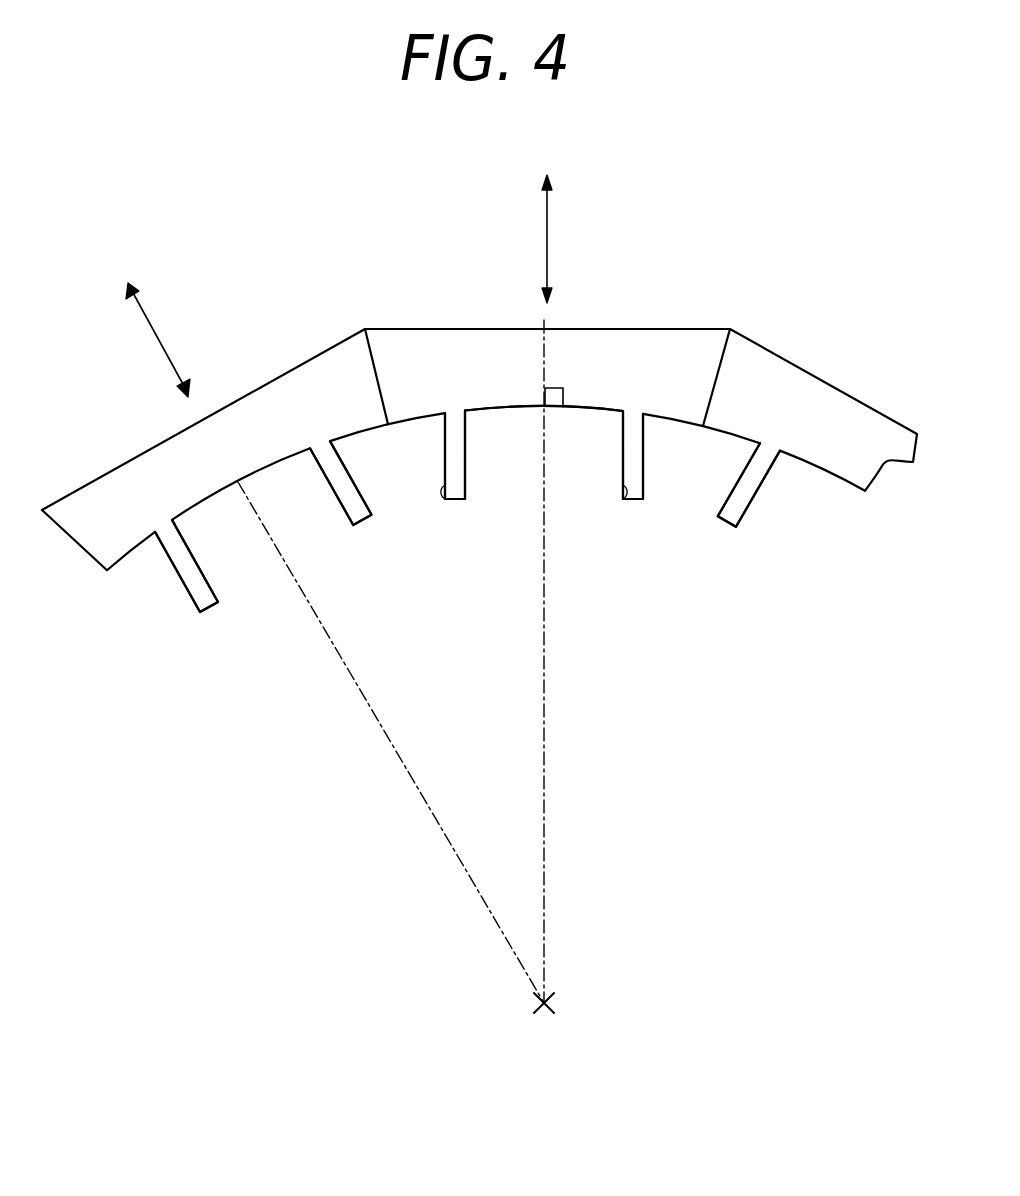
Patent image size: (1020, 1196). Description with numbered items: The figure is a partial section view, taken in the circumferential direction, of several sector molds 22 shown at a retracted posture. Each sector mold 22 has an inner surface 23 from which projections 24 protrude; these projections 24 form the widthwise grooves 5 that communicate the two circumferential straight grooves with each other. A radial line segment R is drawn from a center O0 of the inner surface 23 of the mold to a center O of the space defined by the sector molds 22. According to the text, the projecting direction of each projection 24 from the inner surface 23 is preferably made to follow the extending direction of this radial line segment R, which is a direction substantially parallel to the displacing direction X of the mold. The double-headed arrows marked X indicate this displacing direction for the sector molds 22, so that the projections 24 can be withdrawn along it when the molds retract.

The sector mold 22 is at (248, 393).
The inner surface of the mold 23 is at (497, 406).
The projection 24 is at (203, 595).
The widthwise groove 5 is at (447, 487).
The displacing direction of the mold X is at (547, 257).
The radial line segment R is at (544, 630).
The center of the space defined by the sector molds O is at (550, 1002).
The center of the inner surface of the mold O0 is at (238, 483).